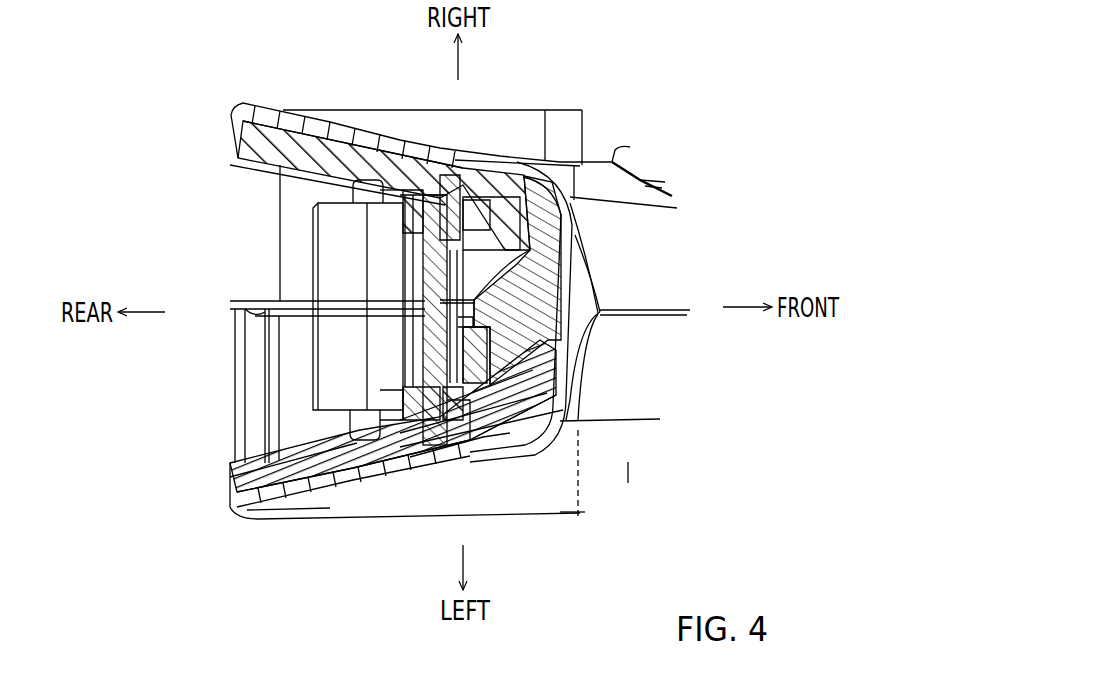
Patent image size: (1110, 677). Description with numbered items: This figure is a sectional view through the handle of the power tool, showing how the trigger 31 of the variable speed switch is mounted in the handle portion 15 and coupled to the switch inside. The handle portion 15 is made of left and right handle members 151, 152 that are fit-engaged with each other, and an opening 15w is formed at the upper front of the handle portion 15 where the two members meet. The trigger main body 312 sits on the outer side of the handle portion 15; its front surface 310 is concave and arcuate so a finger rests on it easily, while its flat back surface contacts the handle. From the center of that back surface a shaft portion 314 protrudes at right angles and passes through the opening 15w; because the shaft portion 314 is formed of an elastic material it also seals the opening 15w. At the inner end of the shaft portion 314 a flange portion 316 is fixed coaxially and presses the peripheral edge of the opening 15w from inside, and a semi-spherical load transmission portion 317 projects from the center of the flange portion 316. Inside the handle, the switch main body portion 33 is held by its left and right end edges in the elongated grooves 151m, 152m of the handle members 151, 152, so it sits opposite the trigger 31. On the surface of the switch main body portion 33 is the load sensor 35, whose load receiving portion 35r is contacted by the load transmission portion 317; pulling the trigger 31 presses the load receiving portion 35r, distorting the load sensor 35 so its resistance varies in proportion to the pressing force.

The handle portion 15 is at (228, 110).
The left handle member 151 is at (238, 476).
The right handle member 152 is at (238, 140).
The groove 151m is at (431, 455).
The groove 152m is at (392, 160).
The opening 15w is at (563, 272).
The trigger 31 is at (557, 307).
The surface 310 is at (558, 338).
The trigger main body 312 is at (535, 360).
The shaft portion 314 is at (548, 405).
The flange portion 316 is at (515, 425).
The load transmission portion 317 is at (500, 372).
The switch main body portion 33 is at (435, 312).
The load sensor 35 is at (480, 405).
The load receiving portion 35r is at (440, 165).